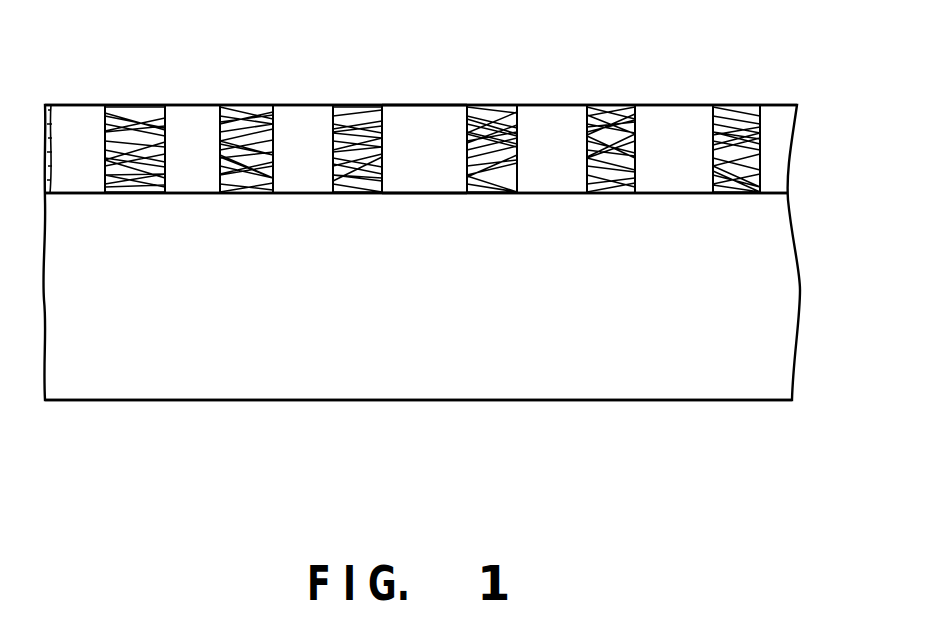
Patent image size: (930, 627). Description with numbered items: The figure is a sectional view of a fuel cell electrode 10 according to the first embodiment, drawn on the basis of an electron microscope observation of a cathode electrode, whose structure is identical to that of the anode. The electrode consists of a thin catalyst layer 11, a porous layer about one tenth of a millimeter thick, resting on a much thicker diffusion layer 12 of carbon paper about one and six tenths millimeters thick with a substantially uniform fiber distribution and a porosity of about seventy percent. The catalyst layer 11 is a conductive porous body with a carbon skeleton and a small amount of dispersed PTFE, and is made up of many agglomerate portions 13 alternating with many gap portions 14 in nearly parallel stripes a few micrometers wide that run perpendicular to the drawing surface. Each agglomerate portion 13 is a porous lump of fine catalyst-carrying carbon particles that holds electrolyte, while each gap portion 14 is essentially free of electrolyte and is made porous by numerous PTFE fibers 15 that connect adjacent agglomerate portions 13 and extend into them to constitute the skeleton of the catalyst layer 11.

The optical device / grating structure 10 is at (520, 87).
The catalyst layer 11 is at (780, 106).
The diffusion layer 12 is at (748, 388).
The agglomerate portion 13 is at (417, 120).
The gap portion 14 is at (617, 106).
The PTFE fiber 15 is at (247, 106).